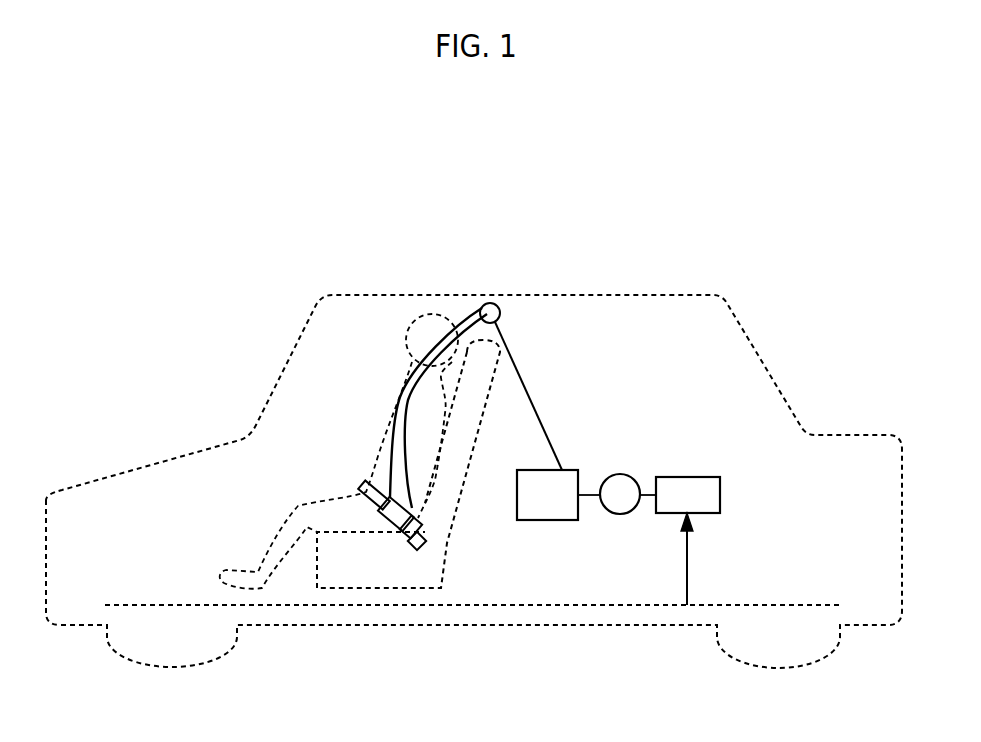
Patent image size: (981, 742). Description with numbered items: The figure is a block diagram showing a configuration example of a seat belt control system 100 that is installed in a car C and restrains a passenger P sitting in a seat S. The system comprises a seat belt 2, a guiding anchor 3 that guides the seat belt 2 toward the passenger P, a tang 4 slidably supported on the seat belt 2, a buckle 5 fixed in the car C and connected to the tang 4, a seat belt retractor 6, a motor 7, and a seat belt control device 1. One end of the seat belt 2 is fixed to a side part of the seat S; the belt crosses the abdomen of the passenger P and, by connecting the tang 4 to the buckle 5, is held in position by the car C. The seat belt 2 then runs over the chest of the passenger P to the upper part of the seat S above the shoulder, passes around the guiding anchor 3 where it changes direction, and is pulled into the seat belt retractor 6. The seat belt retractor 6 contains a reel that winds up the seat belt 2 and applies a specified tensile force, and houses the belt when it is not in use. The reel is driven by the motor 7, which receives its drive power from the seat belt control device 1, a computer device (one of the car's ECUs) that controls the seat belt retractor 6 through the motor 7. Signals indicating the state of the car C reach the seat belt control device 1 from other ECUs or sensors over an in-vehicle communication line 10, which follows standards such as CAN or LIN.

The seat belt control device 1 is at (720, 495).
The seat belt 2 is at (360, 483).
The guiding anchor 3 is at (500, 304).
The tang 4 is at (383, 507).
The buckle 5 is at (423, 533).
The seat belt retractor 6 is at (572, 470).
The motor 7 is at (632, 476).
The in-vehicle communication line 10 is at (530, 605).
The seat belt control system 100 is at (588, 256).
The car C is at (205, 449).
The passenger P is at (422, 313).
The seat S is at (363, 588).